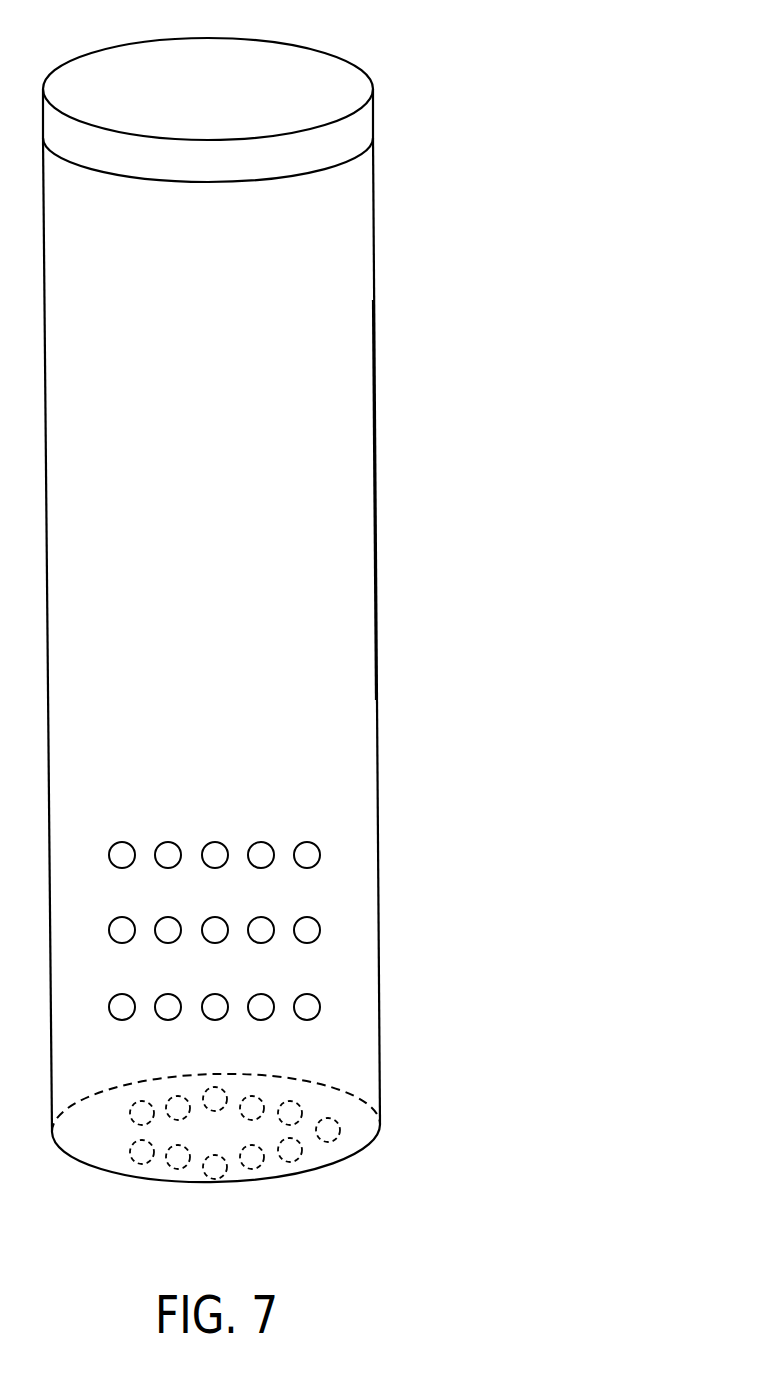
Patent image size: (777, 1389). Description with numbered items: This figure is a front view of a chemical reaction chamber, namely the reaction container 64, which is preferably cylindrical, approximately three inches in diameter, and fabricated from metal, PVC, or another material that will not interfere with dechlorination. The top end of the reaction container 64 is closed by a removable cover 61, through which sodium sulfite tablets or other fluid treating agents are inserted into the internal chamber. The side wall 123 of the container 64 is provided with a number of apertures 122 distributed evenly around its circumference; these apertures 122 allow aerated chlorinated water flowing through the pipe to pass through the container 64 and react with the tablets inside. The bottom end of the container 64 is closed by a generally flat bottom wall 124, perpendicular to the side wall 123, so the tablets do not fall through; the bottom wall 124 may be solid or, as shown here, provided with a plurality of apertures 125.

The removable cover 61 is at (327, 78).
The reaction container 64 is at (386, 446).
The side wall 123 is at (355, 565).
The apertures 122 is at (307, 841).
The bottom wall 124 is at (217, 1185).
The apertures 125 is at (333, 1142).